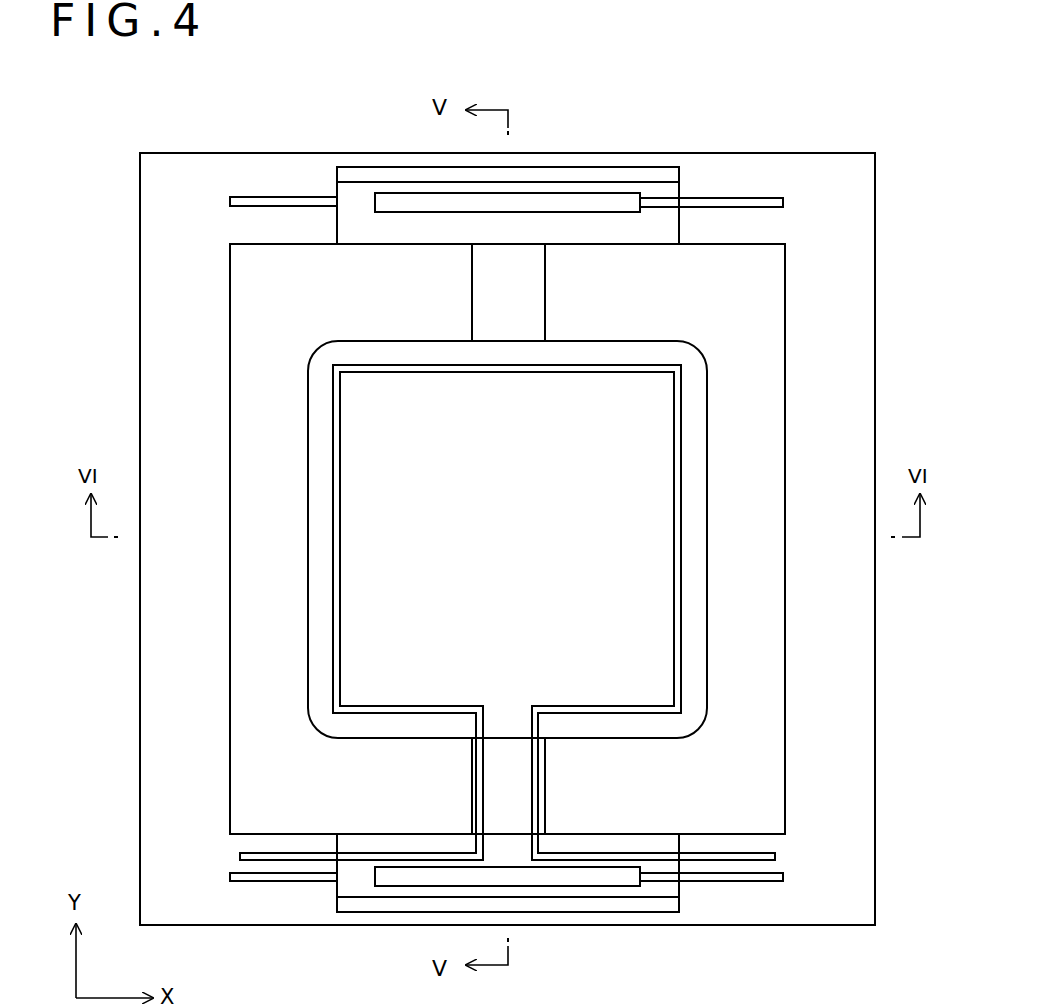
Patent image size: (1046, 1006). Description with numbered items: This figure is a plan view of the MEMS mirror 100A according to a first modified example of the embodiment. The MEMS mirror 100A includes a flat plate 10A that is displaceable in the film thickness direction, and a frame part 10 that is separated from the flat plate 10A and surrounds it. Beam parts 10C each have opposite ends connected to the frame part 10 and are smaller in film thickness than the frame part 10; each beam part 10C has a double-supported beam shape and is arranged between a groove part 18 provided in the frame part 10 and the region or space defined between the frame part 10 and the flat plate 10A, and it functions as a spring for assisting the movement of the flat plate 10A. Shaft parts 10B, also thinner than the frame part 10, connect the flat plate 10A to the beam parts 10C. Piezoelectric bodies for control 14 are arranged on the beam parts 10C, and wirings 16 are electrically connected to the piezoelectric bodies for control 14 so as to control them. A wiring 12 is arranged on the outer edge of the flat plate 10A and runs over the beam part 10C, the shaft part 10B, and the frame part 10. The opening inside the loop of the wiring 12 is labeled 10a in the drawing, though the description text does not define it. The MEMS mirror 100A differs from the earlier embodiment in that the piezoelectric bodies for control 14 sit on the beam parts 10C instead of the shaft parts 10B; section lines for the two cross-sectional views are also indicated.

The MEMS mirror 100A is at (120, 170).
The frame part 10 is at (855, 632).
The flat plate 10A is at (707, 389).
The opening 10a is at (610, 585).
The shaft part 10B is at (545, 296).
The beam part 10C is at (337, 188).
The wiring 12 is at (682, 677).
The piezoelectric body for control 14 is at (505, 203).
The wiring 16 is at (748, 197).
The groove part 18 is at (575, 174).